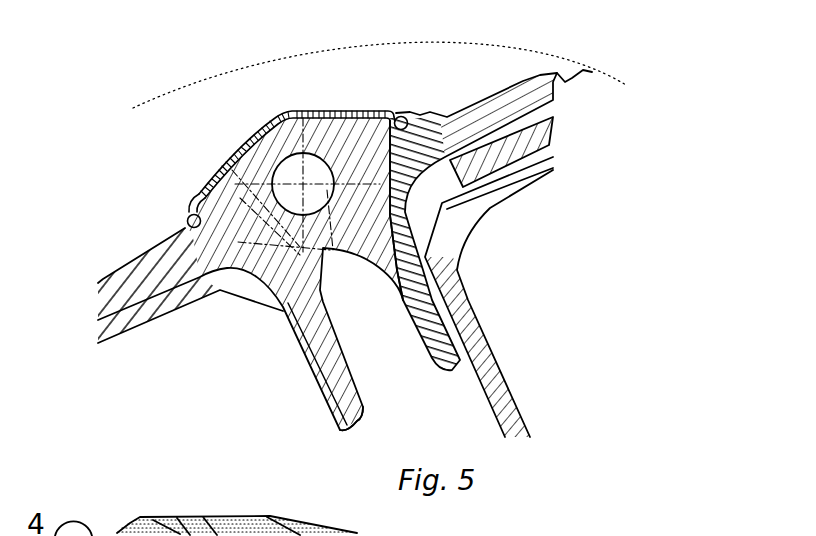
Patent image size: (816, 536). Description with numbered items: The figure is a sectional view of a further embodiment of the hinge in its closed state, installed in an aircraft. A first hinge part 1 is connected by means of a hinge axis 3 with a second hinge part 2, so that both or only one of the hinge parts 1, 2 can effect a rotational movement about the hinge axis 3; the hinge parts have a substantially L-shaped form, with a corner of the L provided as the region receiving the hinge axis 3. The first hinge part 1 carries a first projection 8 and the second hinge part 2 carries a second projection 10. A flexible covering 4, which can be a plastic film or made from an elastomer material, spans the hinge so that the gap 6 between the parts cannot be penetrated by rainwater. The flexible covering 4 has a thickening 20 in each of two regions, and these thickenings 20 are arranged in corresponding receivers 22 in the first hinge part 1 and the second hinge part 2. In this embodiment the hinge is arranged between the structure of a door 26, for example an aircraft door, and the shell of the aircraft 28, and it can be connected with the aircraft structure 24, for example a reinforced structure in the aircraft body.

The first hinge part 1 is at (90, 300).
The second hinge part 2 is at (379, 75).
The hinge axis 3 is at (313, 167).
The flexible covering 4 is at (182, 192).
The gap 6 is at (379, 190).
The first projection 8 is at (352, 425).
The second projection 10 is at (453, 376).
The thickening 20 is at (408, 107).
The receiver 22 is at (170, 230).
The aircraft structure 24 is at (466, 288).
The structure of a door 26 is at (113, 350).
The shell of an aircraft 28 is at (558, 127).